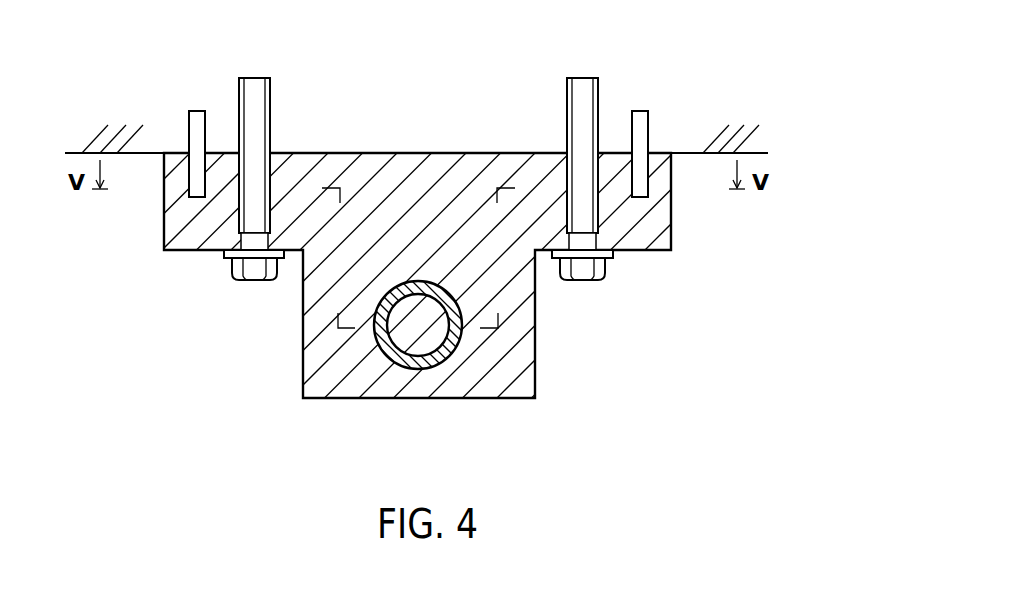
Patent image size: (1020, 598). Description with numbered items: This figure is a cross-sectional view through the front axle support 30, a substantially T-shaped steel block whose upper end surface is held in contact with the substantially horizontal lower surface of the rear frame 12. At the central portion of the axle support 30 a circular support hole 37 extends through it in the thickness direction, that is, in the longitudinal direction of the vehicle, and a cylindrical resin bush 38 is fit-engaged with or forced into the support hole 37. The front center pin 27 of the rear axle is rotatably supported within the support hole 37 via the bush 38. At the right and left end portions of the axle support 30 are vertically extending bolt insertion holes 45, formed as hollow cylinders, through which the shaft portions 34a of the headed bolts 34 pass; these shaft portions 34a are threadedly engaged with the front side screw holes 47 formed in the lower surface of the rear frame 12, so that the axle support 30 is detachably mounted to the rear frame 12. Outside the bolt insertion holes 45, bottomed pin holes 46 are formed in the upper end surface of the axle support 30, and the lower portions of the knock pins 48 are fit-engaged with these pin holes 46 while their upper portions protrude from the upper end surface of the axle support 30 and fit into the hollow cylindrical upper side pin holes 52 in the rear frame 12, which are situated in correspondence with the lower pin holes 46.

The rear frame 12 is at (718, 140).
The front center pin 27 is at (381, 353).
The front axle support 30 is at (505, 400).
The headed bolt 34 is at (256, 273).
The shaft portion 34a is at (258, 110).
The support hole 37 is at (411, 368).
The resin bush 38 is at (433, 366).
The bolt insertion hole 45 is at (240, 203).
The pin hole 46 is at (195, 204).
The front side screw hole 47 is at (250, 96).
The knock pin 48 is at (192, 130).
The upper side pin hole 52 is at (197, 114).